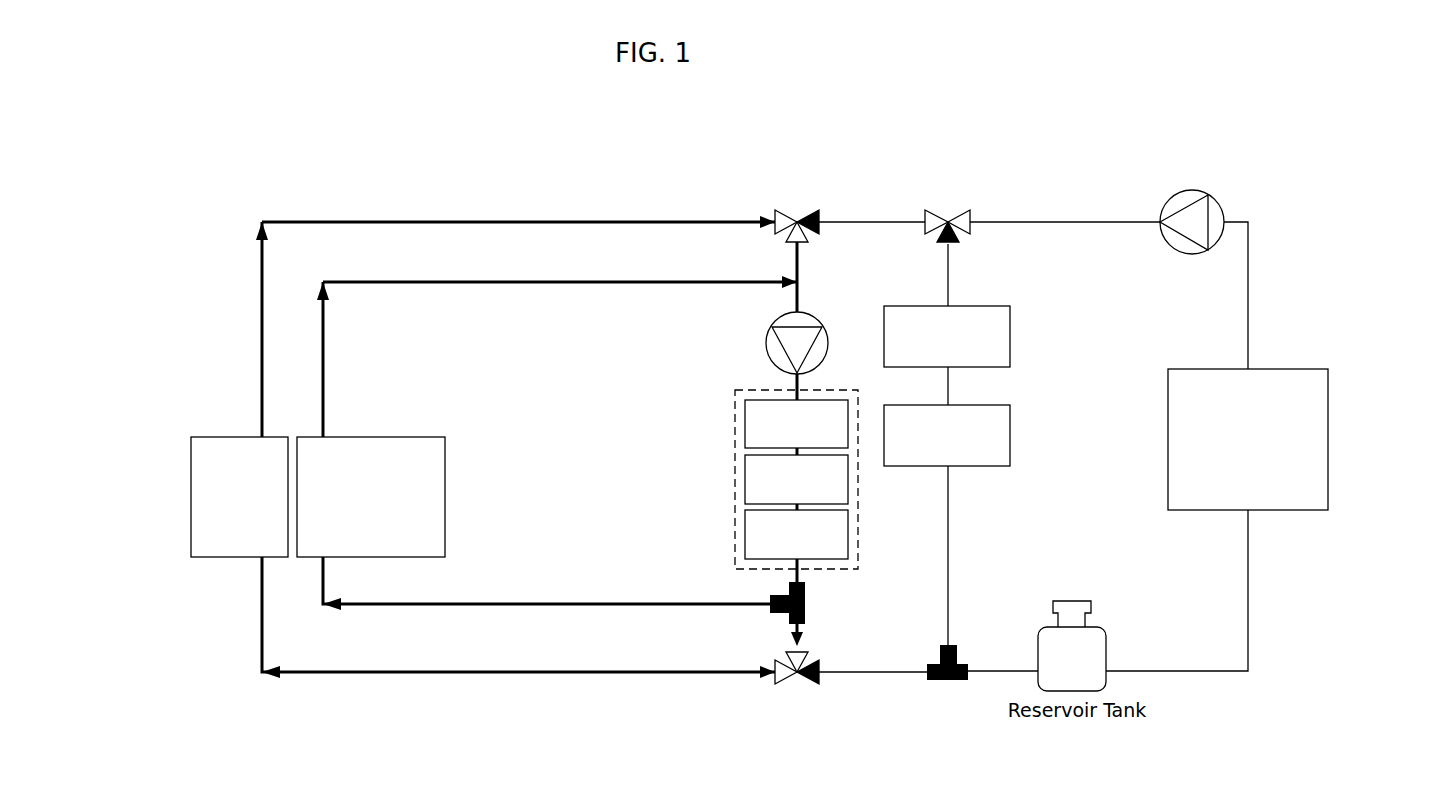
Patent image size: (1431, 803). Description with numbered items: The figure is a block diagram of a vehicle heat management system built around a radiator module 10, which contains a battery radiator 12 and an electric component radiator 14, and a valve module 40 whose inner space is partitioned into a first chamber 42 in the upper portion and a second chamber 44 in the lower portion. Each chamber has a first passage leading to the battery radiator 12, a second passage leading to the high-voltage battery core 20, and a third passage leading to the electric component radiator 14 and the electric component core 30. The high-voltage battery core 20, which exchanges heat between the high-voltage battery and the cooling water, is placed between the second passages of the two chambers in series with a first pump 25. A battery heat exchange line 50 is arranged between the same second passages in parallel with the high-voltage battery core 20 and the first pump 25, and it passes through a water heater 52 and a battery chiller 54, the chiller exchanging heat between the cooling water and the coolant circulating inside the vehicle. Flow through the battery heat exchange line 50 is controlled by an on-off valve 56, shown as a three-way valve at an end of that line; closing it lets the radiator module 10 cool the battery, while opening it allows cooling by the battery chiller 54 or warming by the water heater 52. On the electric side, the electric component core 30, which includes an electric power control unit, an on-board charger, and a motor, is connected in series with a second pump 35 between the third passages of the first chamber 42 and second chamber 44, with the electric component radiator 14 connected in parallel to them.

The radiator module 10 is at (250, 521).
The battery radiator 12 is at (191, 520).
The electric component radiator 14 is at (310, 557).
The high-voltage battery core 20 is at (1328, 437).
The first pump 25 is at (1192, 190).
The electric component core 30 is at (735, 479).
The second pump 35 is at (766, 341).
The valve module 40 is at (798, 448).
The first chamber 42 is at (792, 212).
The second chamber 44 is at (802, 682).
The battery heat exchange line 50 is at (948, 278).
The water heater 52 is at (1010, 335).
The battery chiller 54 is at (1010, 433).
The on-off valve 56 is at (948, 212).